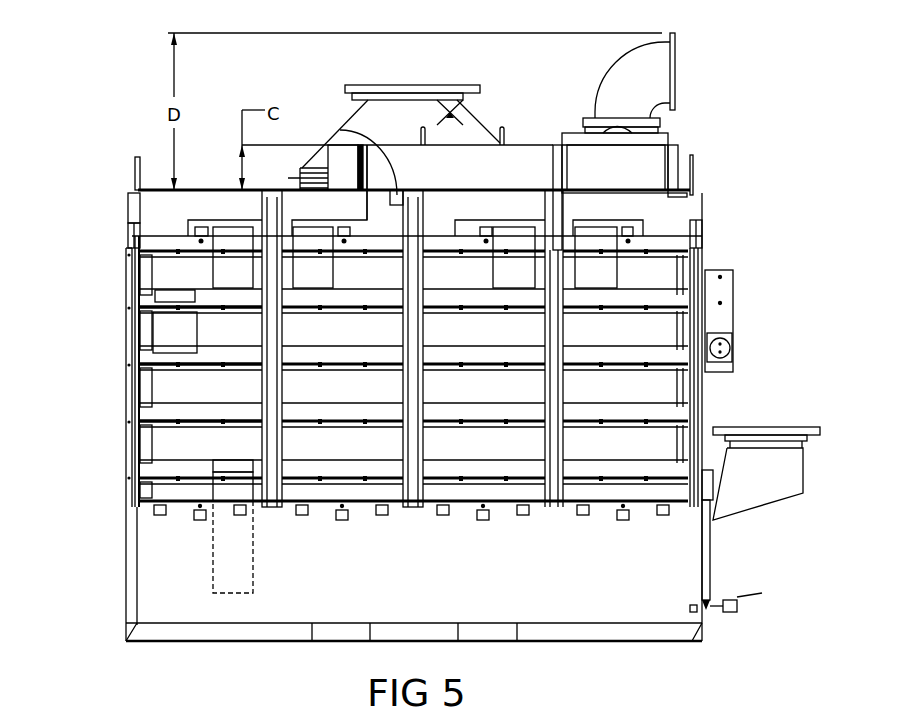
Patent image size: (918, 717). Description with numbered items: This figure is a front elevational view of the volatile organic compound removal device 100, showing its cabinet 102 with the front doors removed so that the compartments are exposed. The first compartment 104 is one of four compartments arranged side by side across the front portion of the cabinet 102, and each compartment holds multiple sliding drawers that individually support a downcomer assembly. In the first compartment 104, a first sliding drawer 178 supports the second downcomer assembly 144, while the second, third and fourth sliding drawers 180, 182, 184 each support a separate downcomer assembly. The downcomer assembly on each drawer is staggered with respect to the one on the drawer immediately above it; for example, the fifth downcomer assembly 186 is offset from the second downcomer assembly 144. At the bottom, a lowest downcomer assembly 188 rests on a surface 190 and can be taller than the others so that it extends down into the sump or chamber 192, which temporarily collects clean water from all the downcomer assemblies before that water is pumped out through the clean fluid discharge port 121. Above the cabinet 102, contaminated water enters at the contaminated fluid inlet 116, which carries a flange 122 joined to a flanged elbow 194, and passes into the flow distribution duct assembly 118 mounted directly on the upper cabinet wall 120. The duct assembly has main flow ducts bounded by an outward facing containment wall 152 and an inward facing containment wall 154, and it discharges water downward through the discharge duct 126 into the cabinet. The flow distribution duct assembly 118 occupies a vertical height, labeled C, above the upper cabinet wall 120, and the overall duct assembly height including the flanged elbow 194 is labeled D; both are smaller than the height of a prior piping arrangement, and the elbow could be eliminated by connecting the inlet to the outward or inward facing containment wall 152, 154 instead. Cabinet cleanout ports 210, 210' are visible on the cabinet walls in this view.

The volatile organic compound removal device 100 is at (778, 157).
The cabinet 102 is at (124, 244).
The first compartment 104 is at (128, 396).
The contaminated fluid inlet 116 is at (576, 133).
The flow distribution duct assembly 118 is at (449, 100).
The upper cabinet wall 120 is at (160, 183).
The clean fluid discharge port 121 is at (712, 585).
The flange 122 is at (662, 127).
The discharge duct 126 is at (340, 130).
The second downcomer assembly 144 is at (124, 310).
The outward facing containment wall 152 is at (693, 167).
The inward facing containment wall 154 is at (543, 167).
The first sliding drawer 178 is at (222, 272).
The second sliding drawer 180 is at (208, 296).
The third sliding drawer 182 is at (153, 383).
The fourth sliding drawer 184 is at (167, 407).
The fifth downcomer assembly 186 is at (205, 332).
The lowest downcomer assembly 188 is at (223, 467).
The surface 190 is at (168, 470).
The sump or chamber 192 is at (147, 543).
The flanged elbow 194 is at (655, 78).
The cabinet cleanout port 210 is at (750, 234).
The cabinet cleanout port 210' is at (81, 228).